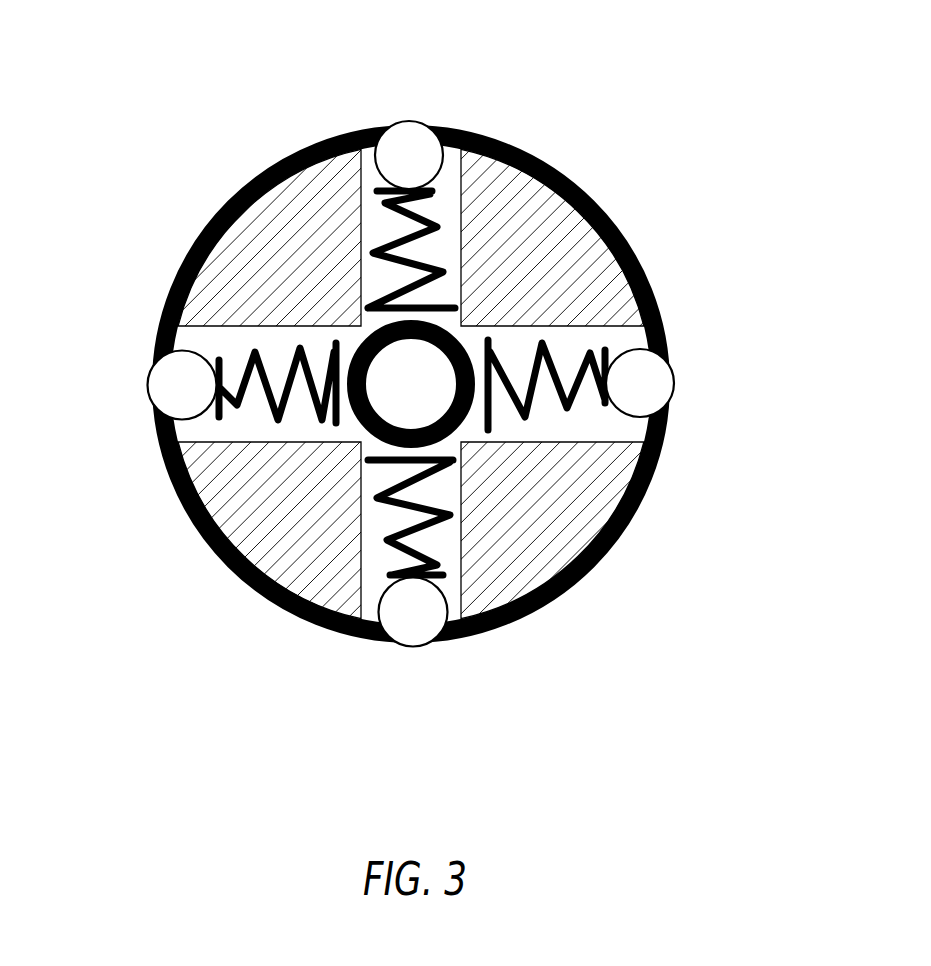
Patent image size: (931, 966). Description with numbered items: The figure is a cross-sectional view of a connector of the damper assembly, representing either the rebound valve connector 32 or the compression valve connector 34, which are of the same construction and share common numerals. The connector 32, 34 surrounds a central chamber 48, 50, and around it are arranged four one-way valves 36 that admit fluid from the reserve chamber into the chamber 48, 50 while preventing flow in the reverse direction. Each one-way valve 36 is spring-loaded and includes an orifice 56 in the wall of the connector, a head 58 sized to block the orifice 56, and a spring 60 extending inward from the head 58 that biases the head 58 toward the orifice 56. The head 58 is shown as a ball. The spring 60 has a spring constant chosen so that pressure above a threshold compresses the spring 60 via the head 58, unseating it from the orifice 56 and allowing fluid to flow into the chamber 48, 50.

The rebound valve connector 32 is at (465, 385).
The compression valve connector 34 is at (465, 385).
The one-way valve 36 is at (413, 97).
The chamber 48 is at (275, 318).
The chamber 50 is at (403, 365).
The orifice 56 is at (428, 107).
The head 58 is at (398, 140).
The spring 60 is at (372, 254).